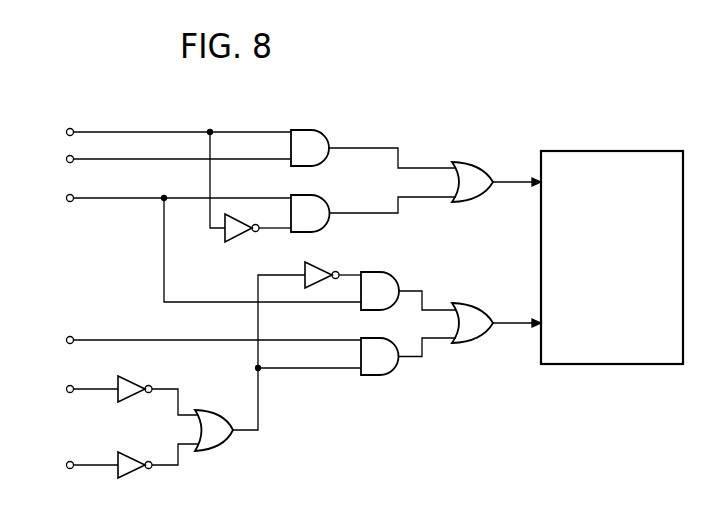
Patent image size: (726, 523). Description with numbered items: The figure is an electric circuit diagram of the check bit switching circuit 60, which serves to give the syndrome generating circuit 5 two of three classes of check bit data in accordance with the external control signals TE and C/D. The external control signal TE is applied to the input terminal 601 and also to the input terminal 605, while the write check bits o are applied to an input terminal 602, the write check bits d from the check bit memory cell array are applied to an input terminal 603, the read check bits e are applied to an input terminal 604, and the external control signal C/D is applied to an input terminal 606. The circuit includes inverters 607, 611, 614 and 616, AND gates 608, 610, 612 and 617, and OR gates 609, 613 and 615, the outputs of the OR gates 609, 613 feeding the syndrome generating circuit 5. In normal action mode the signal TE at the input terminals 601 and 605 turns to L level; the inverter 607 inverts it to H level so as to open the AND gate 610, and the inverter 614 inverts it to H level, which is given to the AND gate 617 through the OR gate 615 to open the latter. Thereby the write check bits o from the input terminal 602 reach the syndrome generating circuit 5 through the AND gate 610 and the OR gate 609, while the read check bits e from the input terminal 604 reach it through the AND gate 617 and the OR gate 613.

The check bit switching circuit 60 is at (518, 77).
The syndrome generating circuit 5 is at (600, 151).
The input terminal 601 is at (71, 128).
The input terminal 602 is at (72, 156).
The input terminal 603 is at (72, 194).
The input terminal 604 is at (72, 337).
The input terminal 605 is at (72, 386).
The input terminal 606 is at (72, 462).
The inverter 607 is at (227, 243).
The AND gate 608 is at (300, 130).
The OR gate 609 is at (465, 162).
The AND gate 610 is at (310, 195).
The inverter 611 is at (312, 262).
The AND gate 612 is at (380, 272).
The OR gate 613 is at (462, 303).
The inverter 614 is at (135, 378).
The OR gate 615 is at (205, 410).
The inverter 616 is at (128, 452).
The AND gate 617 is at (372, 338).